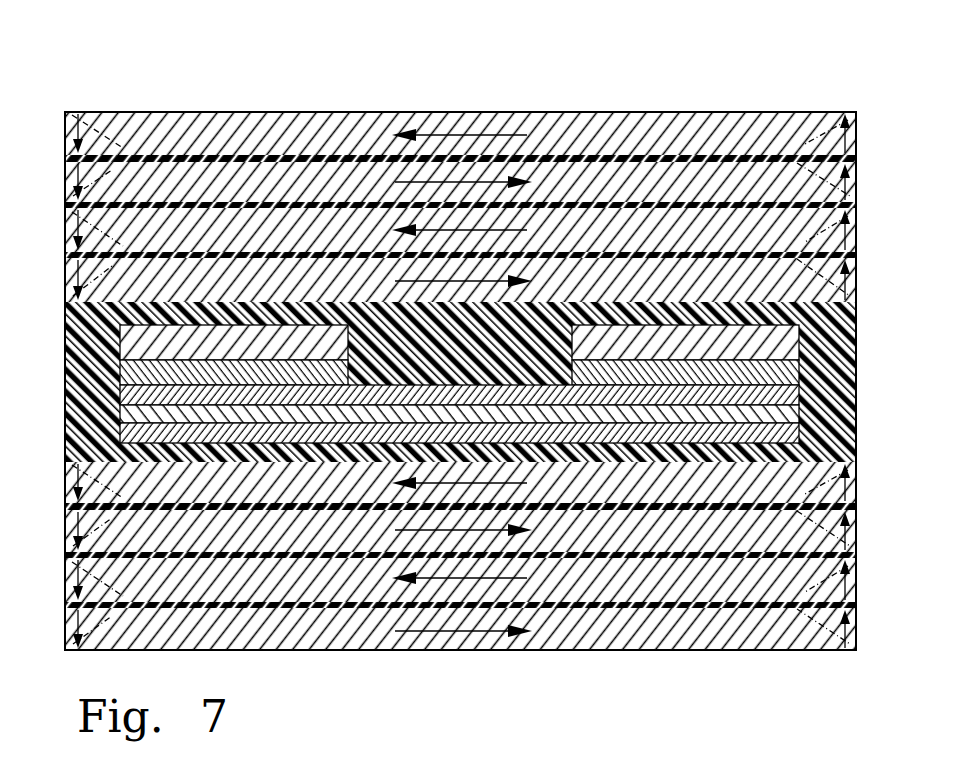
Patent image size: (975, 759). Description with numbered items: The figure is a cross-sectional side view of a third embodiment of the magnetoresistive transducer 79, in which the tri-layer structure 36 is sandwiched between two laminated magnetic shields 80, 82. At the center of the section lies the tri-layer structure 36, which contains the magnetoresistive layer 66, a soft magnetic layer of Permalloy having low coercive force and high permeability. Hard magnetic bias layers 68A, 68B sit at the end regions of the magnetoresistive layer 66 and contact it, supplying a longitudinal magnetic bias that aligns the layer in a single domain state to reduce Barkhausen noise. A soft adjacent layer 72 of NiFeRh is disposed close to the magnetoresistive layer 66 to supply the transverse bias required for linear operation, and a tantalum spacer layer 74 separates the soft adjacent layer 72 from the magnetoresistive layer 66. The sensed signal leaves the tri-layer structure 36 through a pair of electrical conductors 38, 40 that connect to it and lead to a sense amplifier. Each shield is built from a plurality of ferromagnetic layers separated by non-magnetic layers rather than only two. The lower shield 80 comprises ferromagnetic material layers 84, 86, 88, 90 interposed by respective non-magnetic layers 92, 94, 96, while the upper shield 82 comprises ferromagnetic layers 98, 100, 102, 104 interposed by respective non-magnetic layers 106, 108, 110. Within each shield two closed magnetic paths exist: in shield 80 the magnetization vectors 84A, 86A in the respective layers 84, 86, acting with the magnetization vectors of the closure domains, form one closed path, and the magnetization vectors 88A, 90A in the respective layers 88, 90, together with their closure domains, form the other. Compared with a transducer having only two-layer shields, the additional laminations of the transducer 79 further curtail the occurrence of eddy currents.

The tri-layer structure 36 is at (826, 420).
The electrical conductor 38 is at (770, 341).
The electrical conductor 40 is at (145, 344).
The magnetoresistive layer 66 is at (140, 396).
The hard magnetic bias layer 68A is at (140, 378).
The hard magnetic bias layer 68B is at (790, 374).
The soft adjacent layer 72 is at (132, 432).
The spacer layer 74 is at (137, 413).
The transducer 79 is at (842, 100).
The magnetic shield 80 is at (638, 665).
The magnetic shield 82 is at (638, 100).
The ferromagnetic material layer 84 is at (858, 648).
The magnetization vector 84A is at (458, 633).
The ferromagnetic material layer 86 is at (858, 578).
The magnetization vector 86A is at (495, 579).
The ferromagnetic material layer 88 is at (852, 540).
The magnetization vector 88A is at (420, 532).
The ferromagnetic material layer 90 is at (853, 468).
The magnetization vector 90A is at (430, 485).
The non-magnetic layer 92 is at (856, 608).
The non-magnetic layer 94 is at (856, 556).
The non-magnetic layer 96 is at (852, 506).
The ferromagnetic layer 98 is at (852, 299).
The ferromagnetic layer 100 is at (857, 228).
The ferromagnetic layer 102 is at (848, 194).
The ferromagnetic layer 104 is at (850, 131).
The non-magnetic layer 106 is at (856, 256).
The non-magnetic layer 108 is at (856, 207).
The non-magnetic layer 110 is at (850, 158).